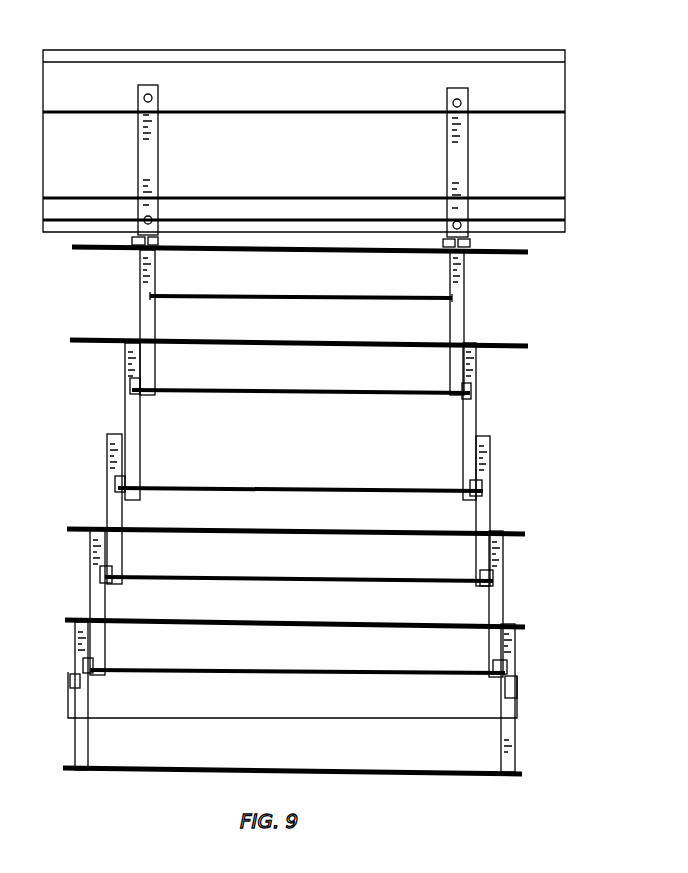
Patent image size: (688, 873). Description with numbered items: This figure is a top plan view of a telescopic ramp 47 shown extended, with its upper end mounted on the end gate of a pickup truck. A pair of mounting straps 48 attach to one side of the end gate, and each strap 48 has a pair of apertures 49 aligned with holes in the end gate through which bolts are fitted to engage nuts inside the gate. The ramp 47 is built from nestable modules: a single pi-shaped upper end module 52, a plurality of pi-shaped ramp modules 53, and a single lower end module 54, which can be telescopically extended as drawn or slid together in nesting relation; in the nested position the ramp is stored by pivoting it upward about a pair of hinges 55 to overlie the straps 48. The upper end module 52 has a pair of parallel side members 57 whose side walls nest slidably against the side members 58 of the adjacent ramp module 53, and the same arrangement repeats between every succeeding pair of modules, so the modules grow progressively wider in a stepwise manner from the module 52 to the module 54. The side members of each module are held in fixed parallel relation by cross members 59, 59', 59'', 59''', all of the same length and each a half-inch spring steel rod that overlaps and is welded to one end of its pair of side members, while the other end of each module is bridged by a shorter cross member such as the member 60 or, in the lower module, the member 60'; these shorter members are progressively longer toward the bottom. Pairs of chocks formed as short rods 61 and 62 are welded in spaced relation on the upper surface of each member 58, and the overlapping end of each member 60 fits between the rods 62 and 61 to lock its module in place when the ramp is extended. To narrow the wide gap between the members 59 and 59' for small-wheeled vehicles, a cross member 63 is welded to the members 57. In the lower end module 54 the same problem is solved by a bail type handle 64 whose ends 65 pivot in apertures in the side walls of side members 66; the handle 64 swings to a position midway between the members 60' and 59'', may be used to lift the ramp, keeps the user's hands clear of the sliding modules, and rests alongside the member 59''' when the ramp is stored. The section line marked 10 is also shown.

The support rail / section line 10 is at (295, 82).
The telescopic ramp 47 is at (603, 496).
The mounting strap 48 is at (150, 170).
The aperture 49 is at (155, 92).
The upper end module 52 is at (365, 322).
The ramp module 53 is at (336, 526).
The lower end module 54 is at (329, 698).
The hinge 55 is at (160, 245).
The side member 57 is at (457, 322).
The side member 58 is at (470, 372).
The cross member 59 is at (331, 269).
The cross member 59' is at (333, 360).
The cross member 59'' is at (329, 792).
The cross member 59''' is at (334, 578).
The cross member 60 is at (300, 401).
The cross member 60' is at (360, 697).
The chock 61 is at (478, 500).
The chock 62 is at (480, 490).
The cross member 63 is at (340, 302).
The bail type handle 64 is at (338, 720).
The handle end 65 is at (80, 684).
The side member 66 is at (80, 748).